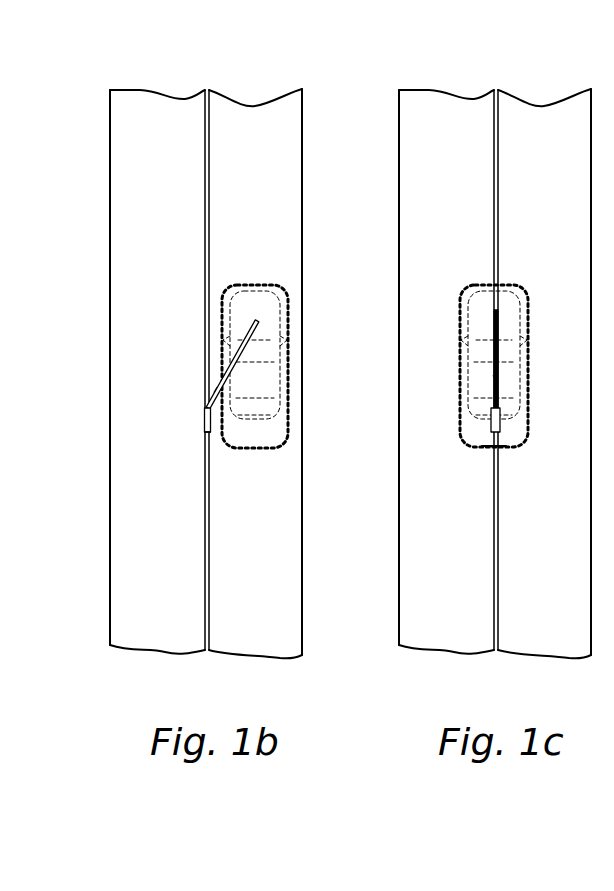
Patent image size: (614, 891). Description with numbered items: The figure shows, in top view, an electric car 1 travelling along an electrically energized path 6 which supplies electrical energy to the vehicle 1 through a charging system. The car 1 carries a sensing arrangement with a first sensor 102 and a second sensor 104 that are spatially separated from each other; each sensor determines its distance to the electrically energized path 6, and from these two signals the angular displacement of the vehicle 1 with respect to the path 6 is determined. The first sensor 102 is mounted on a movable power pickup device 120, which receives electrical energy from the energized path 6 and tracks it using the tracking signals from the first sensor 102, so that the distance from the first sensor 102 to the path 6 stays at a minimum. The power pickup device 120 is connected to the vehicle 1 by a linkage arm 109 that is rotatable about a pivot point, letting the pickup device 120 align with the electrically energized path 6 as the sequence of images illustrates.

In FIG. 1B, the electrically energized path 6 is at (209, 100).
In FIG. 1C, the electrically energized path 6 is at (497, 108).
In FIG. 1B, the electric car 1 is at (255, 247).
In FIG. 1C, the electric car 1 is at (508, 247).
In FIG. 1B, the second sensor 104 is at (238, 319).
In FIG. 1C, the second sensor 104 is at (475, 318).
In FIG. 1B, the linkage arm 109 is at (214, 392).
In FIG. 1C, the linkage arm 109 is at (493, 378).
In FIG. 1B, the first sensor 102 is at (186, 418).
In FIG. 1C, the first sensor 102 is at (473, 418).
In FIG. 1B, the movable power pickup device 120 is at (203, 432).
In FIG. 1C, the movable power pickup device 120 is at (490, 432).